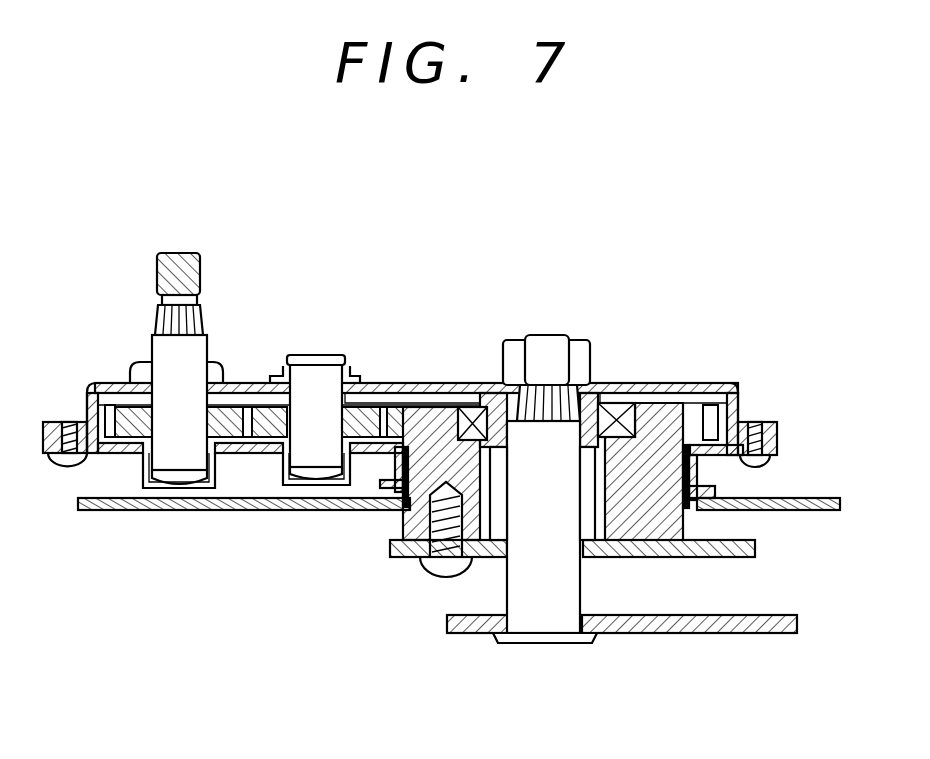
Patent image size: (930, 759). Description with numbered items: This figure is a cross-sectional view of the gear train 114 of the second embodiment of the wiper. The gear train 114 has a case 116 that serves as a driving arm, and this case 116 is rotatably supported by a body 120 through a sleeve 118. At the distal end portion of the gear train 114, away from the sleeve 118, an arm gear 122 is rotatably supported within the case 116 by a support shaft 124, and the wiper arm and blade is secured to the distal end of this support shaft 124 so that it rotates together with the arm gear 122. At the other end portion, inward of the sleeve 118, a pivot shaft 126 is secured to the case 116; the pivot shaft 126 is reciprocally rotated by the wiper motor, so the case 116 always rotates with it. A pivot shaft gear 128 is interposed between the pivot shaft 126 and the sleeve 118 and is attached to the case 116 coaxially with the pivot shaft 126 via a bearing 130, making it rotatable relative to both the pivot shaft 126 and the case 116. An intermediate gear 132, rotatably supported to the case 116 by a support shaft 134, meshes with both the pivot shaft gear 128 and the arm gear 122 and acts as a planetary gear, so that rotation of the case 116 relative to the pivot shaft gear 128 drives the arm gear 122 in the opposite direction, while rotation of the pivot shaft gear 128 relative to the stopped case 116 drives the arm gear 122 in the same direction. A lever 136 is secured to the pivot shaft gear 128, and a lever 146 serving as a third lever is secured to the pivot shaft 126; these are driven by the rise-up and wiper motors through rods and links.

The gear train 114 is at (438, 272).
The case 116 is at (668, 387).
The sleeve 118 is at (393, 468).
The body 120 is at (262, 510).
The arm gear 122 is at (118, 405).
The support shaft 124 is at (190, 365).
The pivot shaft 126 is at (547, 617).
The pivot shaft gear 128 is at (418, 413).
The bearing 130 is at (617, 413).
The intermediate gear 132 is at (367, 410).
The support shaft 134 is at (312, 380).
The lever 136 is at (657, 560).
The lever 146 is at (745, 633).